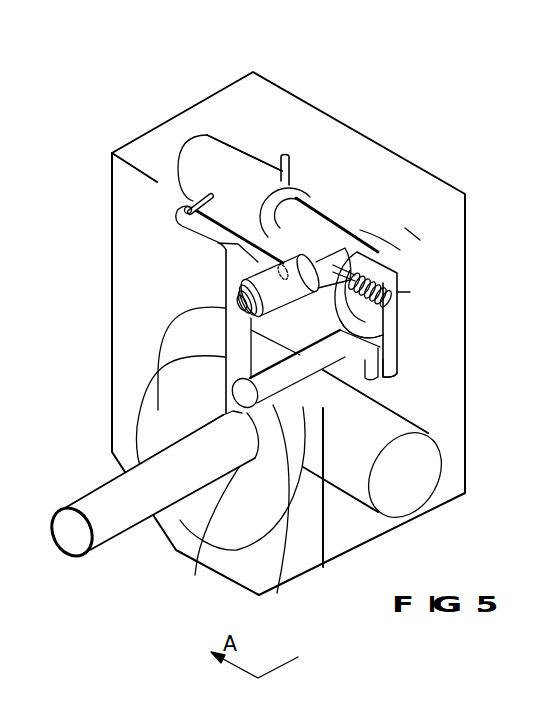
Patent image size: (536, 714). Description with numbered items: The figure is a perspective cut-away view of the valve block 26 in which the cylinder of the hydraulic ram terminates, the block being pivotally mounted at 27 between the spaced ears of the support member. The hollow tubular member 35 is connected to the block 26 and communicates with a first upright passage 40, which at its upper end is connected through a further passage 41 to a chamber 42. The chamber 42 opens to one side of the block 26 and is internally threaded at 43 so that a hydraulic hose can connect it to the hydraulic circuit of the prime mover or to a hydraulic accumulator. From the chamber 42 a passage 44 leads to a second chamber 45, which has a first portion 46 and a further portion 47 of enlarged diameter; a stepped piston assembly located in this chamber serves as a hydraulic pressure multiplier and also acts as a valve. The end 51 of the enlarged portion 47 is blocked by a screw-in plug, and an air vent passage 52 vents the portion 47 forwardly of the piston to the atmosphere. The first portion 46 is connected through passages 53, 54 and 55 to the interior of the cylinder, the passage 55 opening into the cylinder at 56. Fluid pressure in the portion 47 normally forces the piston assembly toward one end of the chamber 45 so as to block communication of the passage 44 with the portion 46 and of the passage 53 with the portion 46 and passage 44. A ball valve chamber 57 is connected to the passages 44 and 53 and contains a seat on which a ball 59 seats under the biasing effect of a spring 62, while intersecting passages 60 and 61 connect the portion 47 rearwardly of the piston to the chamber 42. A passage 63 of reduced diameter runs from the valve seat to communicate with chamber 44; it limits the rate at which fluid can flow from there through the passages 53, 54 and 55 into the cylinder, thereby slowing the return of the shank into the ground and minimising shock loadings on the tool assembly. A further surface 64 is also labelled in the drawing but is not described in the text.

The valve block 26 is at (346, 100).
The pivot mounting 27 is at (435, 495).
The hollow tubular member 35 is at (110, 532).
The first upright passage 40 is at (225, 342).
The further passage 41 is at (226, 244).
The chamber 42 is at (245, 282).
The internal thread 43 is at (242, 300).
The passage 44 is at (372, 250).
The second chamber 45 is at (333, 182).
The first portion 46 is at (360, 230).
The further portion 47 is at (251, 157).
The end of the chamber portion 51 is at (204, 135).
The air vent passage 52 is at (291, 156).
The passage 53 is at (400, 335).
The passage 54 is at (380, 380).
The passage 55 is at (277, 593).
The opening 56 is at (195, 575).
The ball valve chamber 57 is at (400, 292).
The ball valve 59 is at (398, 320).
The intersecting passage 60 is at (203, 205).
The intersecting passage 61 is at (182, 214).
The spring 62 is at (397, 275).
The passage 63 is at (385, 370).
The surface 64 is at (405, 228).